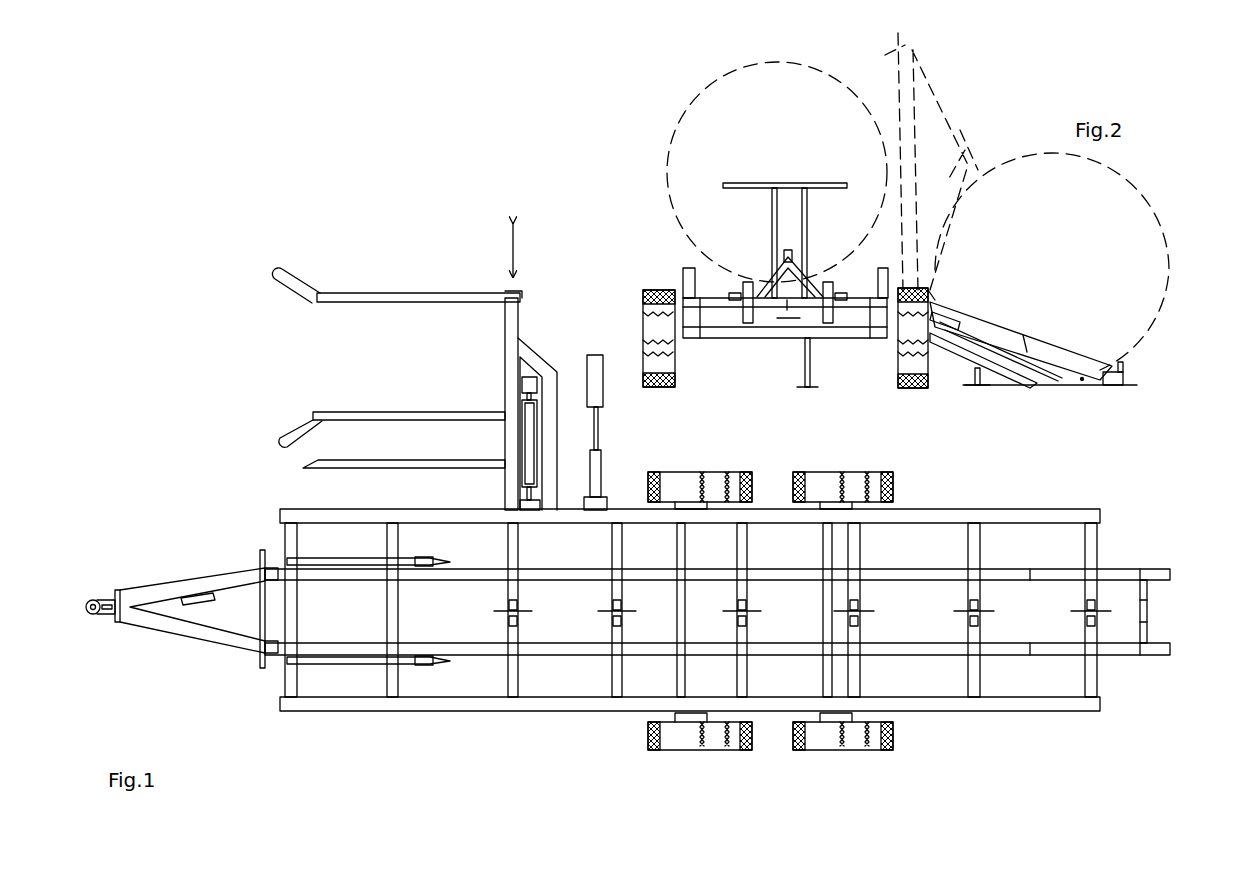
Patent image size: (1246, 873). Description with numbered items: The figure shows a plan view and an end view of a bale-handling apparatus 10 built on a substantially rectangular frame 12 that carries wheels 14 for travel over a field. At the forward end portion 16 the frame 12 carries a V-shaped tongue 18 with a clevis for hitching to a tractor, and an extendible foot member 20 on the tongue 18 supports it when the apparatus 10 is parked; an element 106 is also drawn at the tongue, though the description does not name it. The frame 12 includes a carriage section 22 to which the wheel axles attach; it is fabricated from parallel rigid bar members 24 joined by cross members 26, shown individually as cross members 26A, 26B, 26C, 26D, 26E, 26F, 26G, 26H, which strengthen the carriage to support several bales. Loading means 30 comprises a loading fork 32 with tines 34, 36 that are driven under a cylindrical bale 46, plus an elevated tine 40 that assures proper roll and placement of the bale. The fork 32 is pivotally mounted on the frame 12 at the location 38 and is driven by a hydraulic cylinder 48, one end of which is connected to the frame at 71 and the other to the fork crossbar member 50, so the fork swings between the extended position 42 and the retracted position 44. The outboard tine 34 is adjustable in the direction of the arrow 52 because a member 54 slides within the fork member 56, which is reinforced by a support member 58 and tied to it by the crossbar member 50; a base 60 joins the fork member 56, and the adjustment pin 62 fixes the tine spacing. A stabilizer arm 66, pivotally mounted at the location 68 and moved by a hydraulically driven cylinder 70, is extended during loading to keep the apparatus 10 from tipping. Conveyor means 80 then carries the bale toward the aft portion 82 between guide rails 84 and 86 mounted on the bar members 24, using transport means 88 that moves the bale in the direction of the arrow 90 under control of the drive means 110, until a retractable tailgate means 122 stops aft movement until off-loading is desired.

In FIG. 1, the apparatus 10 is at (958, 495).
In FIG. 1, the frame 12 is at (1005, 510).
In FIG. 1, the wheels 14 is at (770, 485).
In FIG. 1, the forward end portion 16 is at (275, 712).
In FIG. 1, the tongue 18 is at (188, 576).
In FIG. 2, the extendible foot member 20 is at (815, 345).
In FIG. 2, the carriage section 22 is at (785, 345).
In FIG. 2, the bar members 24 is at (693, 340).
In FIG. 2, the cross members 26 is at (710, 300).
In FIG. 1, the cross member 26A is at (291, 680).
In FIG. 1, the cross member 26B is at (392, 680).
In FIG. 1, the cross member 26C is at (513, 680).
In FIG. 1, the cross member 26D is at (617, 680).
In FIG. 1, the cross member 26E is at (742, 680).
In FIG. 1, the cross member 26F is at (858, 680).
In FIG. 1, the cross member 26G is at (978, 680).
In FIG. 1, the cross member 26H is at (1095, 680).
In FIG. 1, the loading means 30 is at (521, 388).
In FIG. 2, the loading means 30 is at (1095, 345).
In FIG. 1, the loading fork 32 is at (415, 292).
In FIG. 2, the loading fork 32 is at (880, 118).
In FIG. 1, the outboard tine 34 is at (312, 305).
In FIG. 2, the outboard tine 34 is at (978, 375).
In FIG. 1, the tine 36 is at (315, 414).
In FIG. 1, the pivot location 38 is at (495, 500).
In FIG. 1, the elevated tine 40 is at (304, 466).
In FIG. 2, the extended position 42 is at (1025, 320).
In FIG. 2, the retracted position 44 is at (950, 100).
In FIG. 2, the cylindrical bale 46 is at (1165, 275).
In FIG. 1, the hydraulic cylinder 48 is at (526, 420).
In FIG. 1, the fork crossbar member 50 is at (530, 372).
In FIG. 1, the arrow 52 is at (513, 252).
In FIG. 1, the member 54 is at (522, 296).
In FIG. 1, the fork member 56 is at (510, 345).
In FIG. 2, the fork member 56 is at (1065, 365).
In FIG. 1, the support member 58 is at (553, 440).
In FIG. 2, the base 60 is at (1065, 382).
In FIG. 2, the adjustment pin 62 is at (1085, 380).
In FIG. 1, the stabilizer arm 66 is at (602, 372).
In FIG. 2, the stabilizer arm 66 is at (940, 200).
In FIG. 1, the pivot location 68 is at (618, 498).
In FIG. 2, the hydraulically driven cylinder 70 is at (955, 320).
In FIG. 1, the cylinder frame connection 71 is at (531, 512).
In FIG. 1, the conveyor means 80 is at (502, 712).
In FIG. 1, the aft portion 82 is at (1095, 725).
In FIG. 2, the guide rail 84 is at (685, 275).
In FIG. 2, the guide rail 86 is at (835, 290).
In FIG. 1, the transport means 88 is at (896, 560).
In FIG. 1, the arrow 90 is at (470, 612).
In FIG. 1, the hitch plate 106 is at (262, 652).
In FIG. 1, the drive means 110 is at (443, 558).
In FIG. 1, the tailgate means 122 is at (1150, 605).